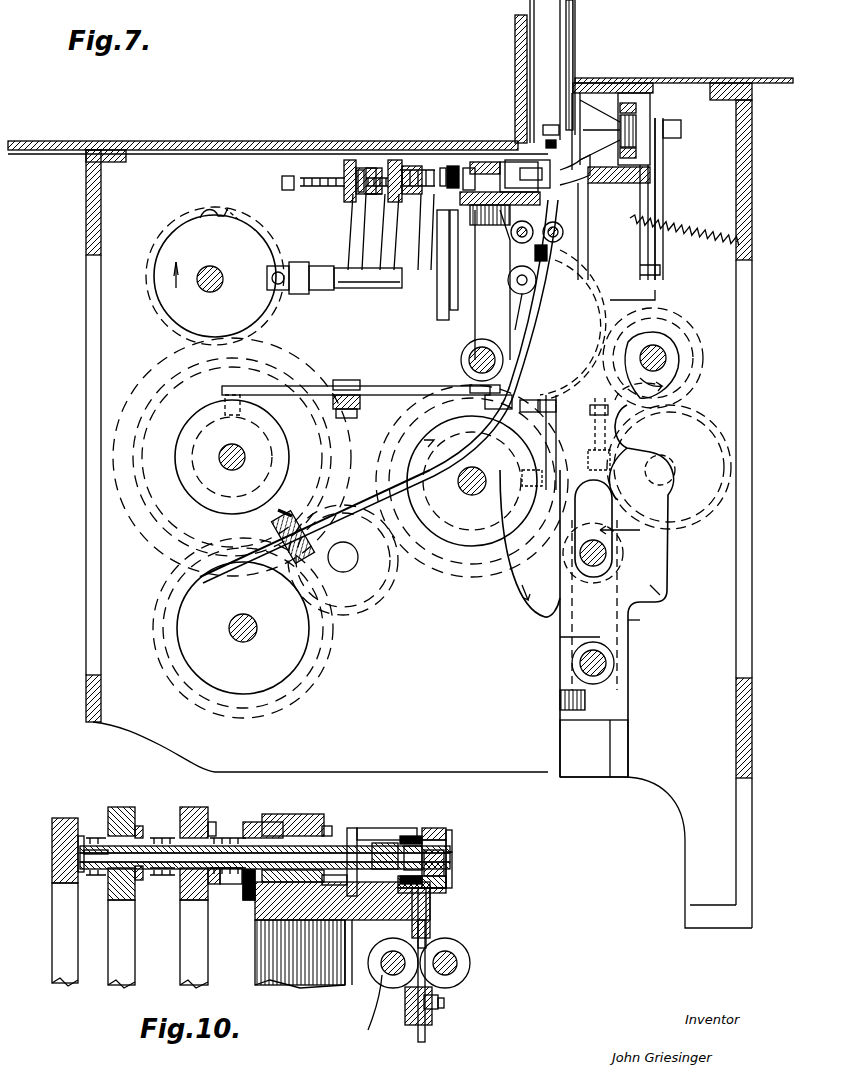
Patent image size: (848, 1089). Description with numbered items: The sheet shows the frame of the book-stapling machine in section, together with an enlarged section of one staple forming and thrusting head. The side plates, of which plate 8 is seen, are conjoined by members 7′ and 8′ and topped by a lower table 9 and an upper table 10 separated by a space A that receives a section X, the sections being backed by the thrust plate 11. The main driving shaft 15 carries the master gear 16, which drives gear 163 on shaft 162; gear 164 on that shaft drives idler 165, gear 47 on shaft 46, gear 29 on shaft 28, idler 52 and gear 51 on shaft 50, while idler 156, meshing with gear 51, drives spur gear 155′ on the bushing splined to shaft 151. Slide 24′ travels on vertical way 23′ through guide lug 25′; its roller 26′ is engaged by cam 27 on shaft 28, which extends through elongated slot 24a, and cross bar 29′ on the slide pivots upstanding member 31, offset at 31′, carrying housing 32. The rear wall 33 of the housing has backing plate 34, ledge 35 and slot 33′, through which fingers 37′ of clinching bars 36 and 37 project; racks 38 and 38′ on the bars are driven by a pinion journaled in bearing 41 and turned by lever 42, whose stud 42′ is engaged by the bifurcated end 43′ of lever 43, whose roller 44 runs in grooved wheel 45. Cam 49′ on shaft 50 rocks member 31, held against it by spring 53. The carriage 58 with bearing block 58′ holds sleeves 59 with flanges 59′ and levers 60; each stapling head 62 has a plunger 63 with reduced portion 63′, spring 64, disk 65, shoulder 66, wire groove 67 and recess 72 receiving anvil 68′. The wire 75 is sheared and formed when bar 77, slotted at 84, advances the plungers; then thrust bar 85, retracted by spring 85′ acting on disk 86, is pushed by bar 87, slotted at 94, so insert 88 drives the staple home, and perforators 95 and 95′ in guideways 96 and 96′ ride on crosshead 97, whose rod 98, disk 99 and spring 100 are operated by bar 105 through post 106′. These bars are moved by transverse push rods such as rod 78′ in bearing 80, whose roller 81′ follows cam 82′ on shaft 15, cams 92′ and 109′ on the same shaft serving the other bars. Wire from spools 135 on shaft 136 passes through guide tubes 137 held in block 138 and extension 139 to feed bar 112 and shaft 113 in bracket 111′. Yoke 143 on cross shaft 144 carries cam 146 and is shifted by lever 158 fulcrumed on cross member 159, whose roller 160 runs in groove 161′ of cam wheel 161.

In FIG. 7, the side frame plate 7′ is at (752, 152).
In FIG. 7, the frame plate 8 is at (108, 620).
In FIG. 7, the frame post 8′ is at (103, 693).
In FIG. 7, the top plate 9 is at (186, 141).
In FIG. 7, the top cross plate 10 is at (705, 78).
In FIG. 7, the vertical plate 11 is at (515, 18).
In FIG. 7, the wheel 15 is at (212, 293).
In FIG. 7, the wheel path 16 is at (152, 312).
In FIG. 7, the slide block 23′ is at (610, 750).
In FIG. 7, the slide bar 24′ is at (618, 702).
In FIG. 7, the slide arm 24a is at (640, 530).
In FIG. 7, the cam follower 25′ is at (630, 425).
In FIG. 7, the cam lever 26′ is at (650, 448).
In FIG. 7, the link 27 is at (545, 605).
In FIG. 7, the pivot 28 is at (606, 560).
In FIG. 7, the pivot path 29 is at (630, 570).
In FIG. 7, the pivot pin 29′ is at (610, 664).
In FIG. 7, the arm 31 is at (625, 630).
In FIG. 7, the arm end 31′ is at (655, 594).
In FIG. 7, the housing 32 is at (635, 90).
In FIG. 7, the bracket 33 is at (550, 114).
In FIG. 7, the housing wall 33′ is at (592, 85).
In FIG. 7, the guide rod 34 is at (574, 26).
In FIG. 7, the stop 35 is at (548, 136).
In FIG. 7, the gear 36 is at (638, 104).
In FIG. 7, the gear 37 is at (640, 152).
In FIG. 7, the shaft 37′ is at (596, 184).
In FIG. 7, the worm 38 is at (640, 118).
In FIG. 7, the rod 38′ is at (660, 146).
In FIG. 7, the block 41 is at (645, 122).
In FIG. 7, the shaft 42 is at (660, 190).
In FIG. 7, the collar 42′ is at (660, 262).
In FIG. 7, the link 43 is at (557, 439).
In FIG. 7, the slide 43′ is at (636, 304).
In FIG. 7, the pawl 44 is at (522, 482).
In FIG. 7, the inner wheel 45 is at (465, 500).
In FIG. 7, the wheel 46 is at (460, 485).
In FIG. 7, the wheel path 47 is at (466, 570).
In FIG. 7, the cam 49′ is at (652, 357).
In FIG. 7, the cam path 50 is at (668, 348).
In FIG. 7, the cam path 51 is at (702, 346).
In FIG. 7, the lever path 52 is at (692, 520).
In FIG. 7, the spring 53 is at (688, 228).
In FIG. 7, the carrier 58 is at (490, 225).
In FIG. 10, the carrier 58 is at (332, 914).
In FIG. 7, the carrier plate 58′ is at (476, 160).
In FIG. 10, the carrier plate 58′ is at (290, 812).
In FIG. 7, the sleeve 59 is at (480, 162).
In FIG. 10, the sleeve 59 is at (325, 824).
In FIG. 10, the shaft 59′ is at (336, 845).
In FIG. 7, the collar 60 is at (452, 164).
In FIG. 10, the collar 60 is at (250, 902).
In FIG. 7, the head 62 is at (527, 174).
In FIG. 10, the block 63 is at (416, 846).
In FIG. 10, the spring 63′ is at (228, 835).
In FIG. 7, the washer 64 is at (442, 166).
In FIG. 10, the washer 64 is at (222, 884).
In FIG. 7, the spring 65 is at (422, 166).
In FIG. 10, the spring 65 is at (228, 886).
In FIG. 10, the arm 66 is at (355, 952).
In FIG. 10, the plug 67 is at (446, 820).
In FIG. 7, the cap 68′ is at (575, 170).
In FIG. 10, the cap 68′ is at (452, 836).
In FIG. 10, the pin 72 is at (448, 872).
In FIG. 7, the roller shaft 75 is at (562, 228).
In FIG. 10, the roller shaft 75 is at (432, 922).
In FIG. 7, the disc 77 is at (395, 158).
In FIG. 10, the disc 77 is at (195, 806).
In FIG. 7, the rod 78′ is at (368, 290).
In FIG. 7, the coupling 80 is at (322, 293).
In FIG. 7, the coupling 81′ is at (299, 291).
In FIG. 7, the joint 82′ is at (278, 292).
In FIG. 7, the disc 84 is at (414, 196).
In FIG. 10, the disc 84 is at (190, 806).
In FIG. 7, the spring 85 is at (380, 175).
In FIG. 10, the spring 85 is at (170, 876).
In FIG. 7, the spring 85′ is at (330, 172).
In FIG. 10, the spring 85′ is at (154, 896).
In FIG. 7, the disc 86 is at (352, 158).
In FIG. 10, the disc 86 is at (140, 824).
In FIG. 10, the disc 87 is at (120, 806).
In FIG. 10, the ring 88 is at (410, 836).
In FIG. 7, the pawl 92′ is at (238, 210).
In FIG. 7, the plate 94 is at (362, 168).
In FIG. 10, the plate 94 is at (121, 928).
In FIG. 10, the bracket 95 is at (432, 906).
In FIG. 10, the cap 95′ is at (430, 826).
In FIG. 10, the plate 96 is at (446, 874).
In FIG. 10, the casing 96′ is at (446, 830).
In FIG. 10, the flange 97 is at (354, 826).
In FIG. 7, the nut 98 is at (295, 176).
In FIG. 10, the nut 98 is at (262, 820).
In FIG. 7, the washer 99 is at (366, 180).
In FIG. 10, the washer 99 is at (82, 840).
In FIG. 7, the pin 100 is at (360, 192).
In FIG. 10, the pin 100 is at (96, 868).
In FIG. 7, the plate 105 is at (330, 176).
In FIG. 10, the plate 105 is at (52, 860).
In FIG. 7, the arm 106′ is at (364, 236).
In FIG. 10, the arm 106′ is at (60, 910).
In FIG. 7, the catch 109′ is at (208, 209).
In FIG. 10, the roller 111′ is at (364, 1008).
In FIG. 7, the roller 112 is at (535, 236).
In FIG. 10, the roller 112 is at (470, 964).
In FIG. 7, the roller 113 is at (515, 245).
In FIG. 10, the roller 113 is at (388, 972).
In FIG. 7, the wheel path 135 is at (262, 678).
In FIG. 7, the wheel 136 is at (258, 628).
In FIG. 7, the lever 137 is at (368, 500).
In FIG. 10, the lever 137 is at (428, 1035).
In FIG. 7, the roller 138 is at (336, 566).
In FIG. 7, the block 139 is at (526, 255).
In FIG. 10, the block 139 is at (408, 1025).
In FIG. 7, the arm 143 is at (490, 318).
In FIG. 10, the arm 143 is at (322, 980).
In FIG. 7, the pivot 144 is at (466, 366).
In FIG. 7, the rod 146 is at (440, 320).
In FIG. 7, the pin 151 is at (518, 312).
In FIG. 7, the path 155′ is at (573, 325).
In FIG. 7, the stop 156 is at (660, 290).
In FIG. 7, the bar 158 is at (388, 386).
In FIG. 7, the block 159 is at (433, 419).
In FIG. 7, the pin 160 is at (222, 404).
In FIG. 7, the wheel 161 is at (275, 478).
In FIG. 7, the wheel path 161′ is at (232, 457).
In FIG. 7, the hub 162 is at (232, 457).
In FIG. 7, the path 163 is at (156, 560).
In FIG. 7, the path 164 is at (212, 500).
In FIG. 7, the path 165 is at (388, 605).
In FIG. 7, the rod A is at (576, 48).
In FIG. 7, the direction X is at (558, 10).